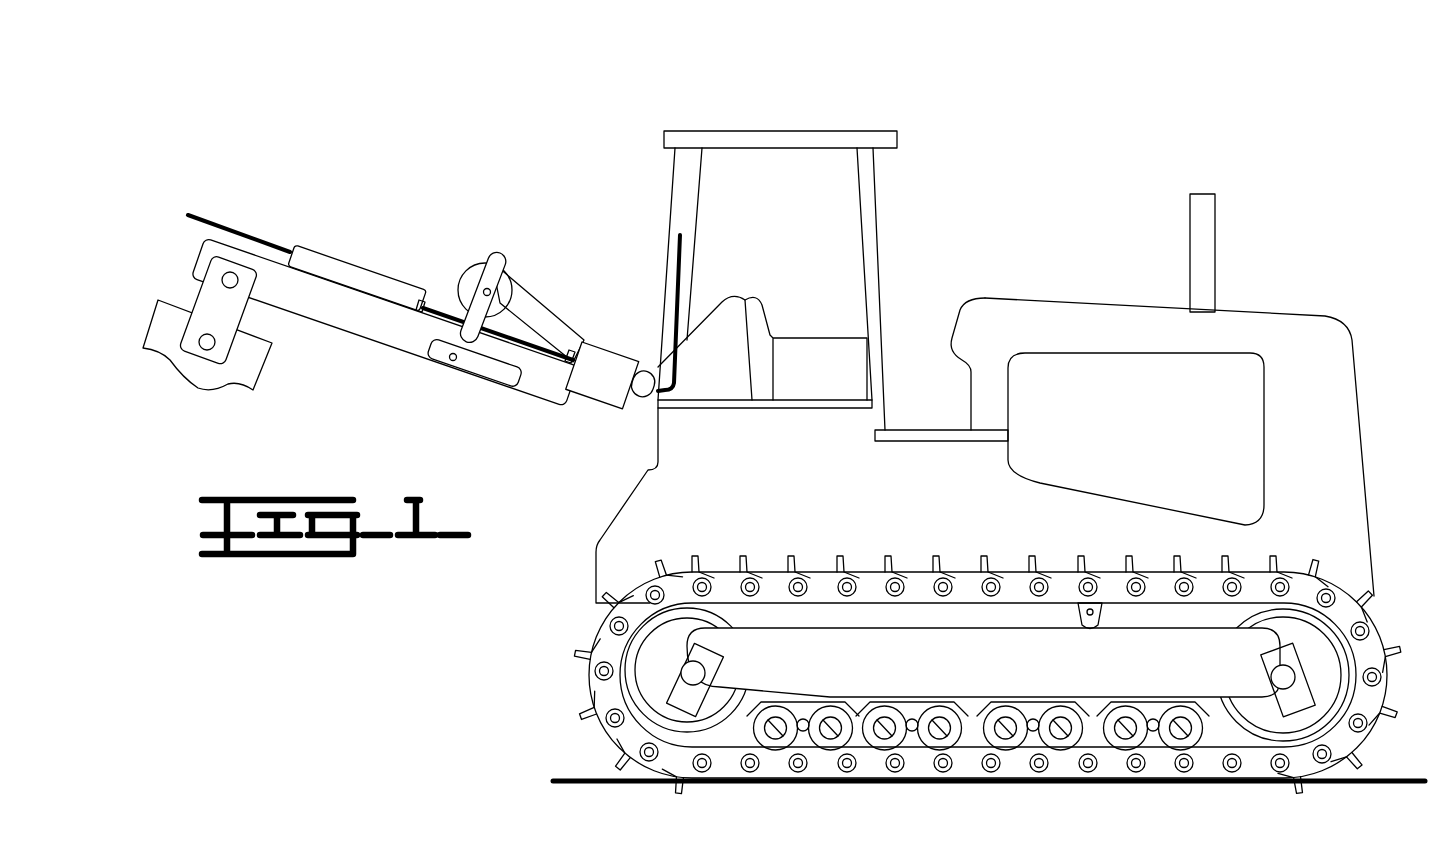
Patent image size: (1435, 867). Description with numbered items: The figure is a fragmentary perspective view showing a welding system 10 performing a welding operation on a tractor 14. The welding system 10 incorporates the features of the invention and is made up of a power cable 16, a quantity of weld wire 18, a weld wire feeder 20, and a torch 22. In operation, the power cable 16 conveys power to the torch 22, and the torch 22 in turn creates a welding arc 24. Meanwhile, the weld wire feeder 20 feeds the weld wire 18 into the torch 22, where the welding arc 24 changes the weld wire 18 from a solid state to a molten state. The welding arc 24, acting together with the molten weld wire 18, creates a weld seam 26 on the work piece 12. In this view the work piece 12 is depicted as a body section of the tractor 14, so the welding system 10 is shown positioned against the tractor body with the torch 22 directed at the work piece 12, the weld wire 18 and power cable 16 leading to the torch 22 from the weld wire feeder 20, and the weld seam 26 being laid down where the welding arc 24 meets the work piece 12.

The welding system 10 is at (451, 275).
The work piece 12 is at (777, 280).
The tractor 14 is at (989, 461).
The power cable 16 is at (448, 292).
The weld wire 18 is at (547, 303).
The weld wire feeder 20 is at (502, 250).
The torch 22 is at (580, 404).
The welding arc 24 is at (660, 400).
The weld seam 26 is at (680, 278).